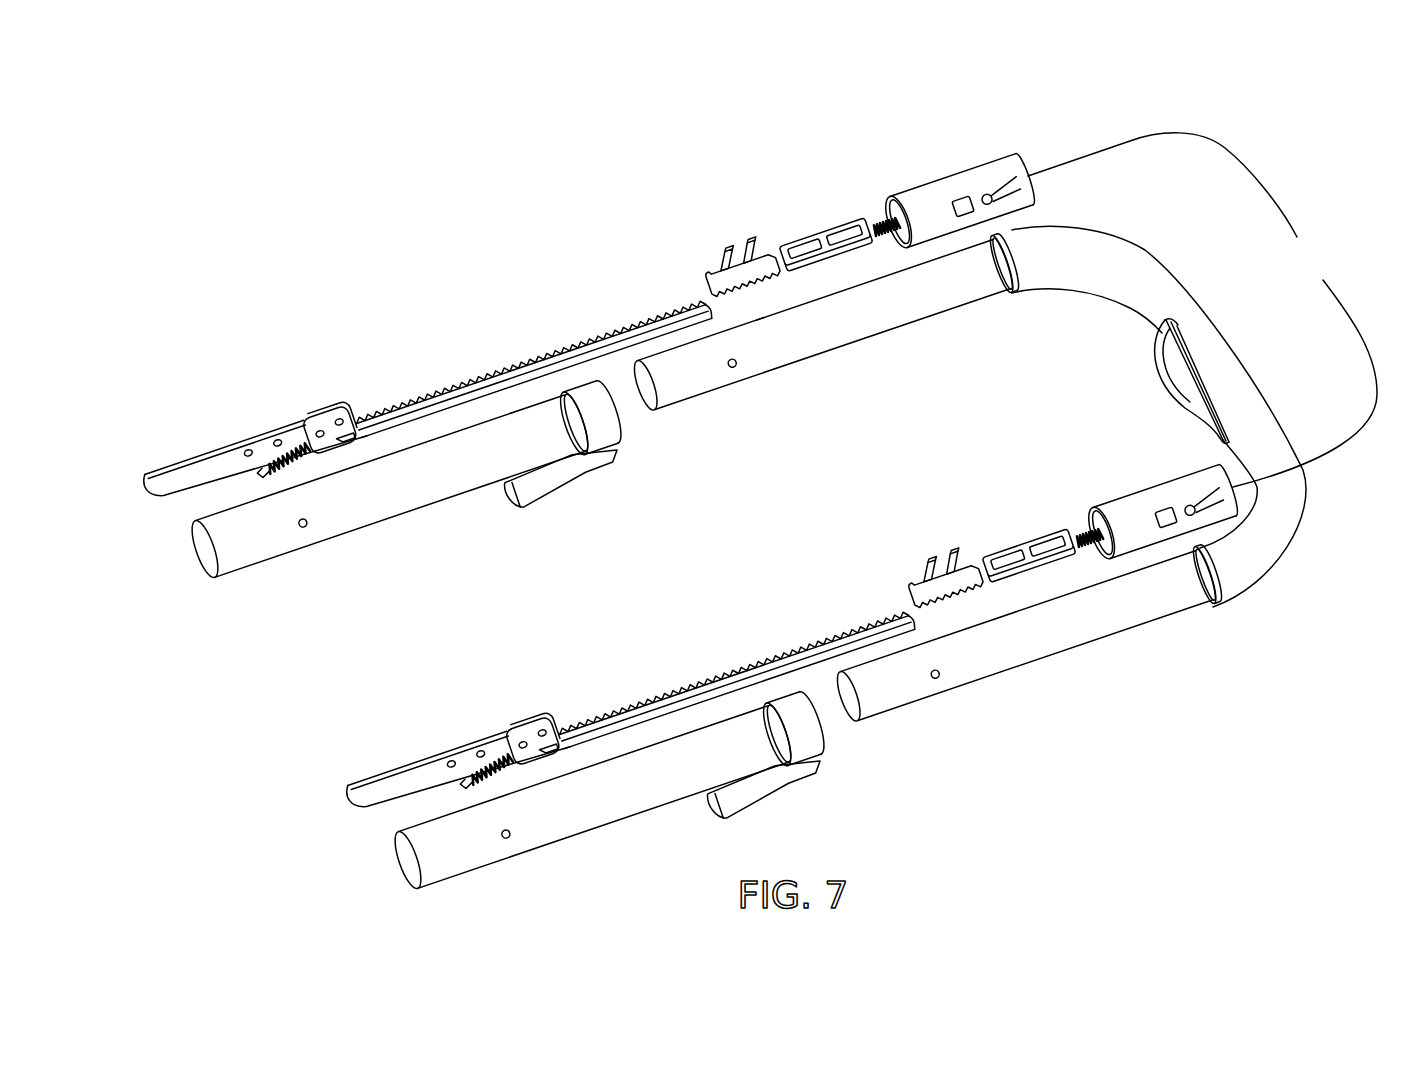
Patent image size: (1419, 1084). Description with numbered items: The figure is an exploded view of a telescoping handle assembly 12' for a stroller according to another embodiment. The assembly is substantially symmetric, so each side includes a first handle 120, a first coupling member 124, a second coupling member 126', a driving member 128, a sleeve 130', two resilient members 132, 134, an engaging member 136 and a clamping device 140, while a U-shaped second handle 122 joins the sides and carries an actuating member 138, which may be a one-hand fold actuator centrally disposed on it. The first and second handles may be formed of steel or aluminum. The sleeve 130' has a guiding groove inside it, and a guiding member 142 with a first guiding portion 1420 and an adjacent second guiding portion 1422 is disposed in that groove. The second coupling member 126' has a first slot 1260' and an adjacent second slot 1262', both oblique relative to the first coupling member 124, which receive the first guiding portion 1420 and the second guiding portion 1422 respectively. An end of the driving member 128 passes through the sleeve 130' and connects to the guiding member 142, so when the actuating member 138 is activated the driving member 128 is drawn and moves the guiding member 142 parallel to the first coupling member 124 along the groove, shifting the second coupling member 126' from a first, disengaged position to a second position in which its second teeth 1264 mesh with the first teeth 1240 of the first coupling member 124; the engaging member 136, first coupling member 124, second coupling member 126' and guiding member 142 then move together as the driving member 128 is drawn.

The telescoping handle assembly 12' is at (298, 176).
The first handle 120 is at (380, 503).
The second handle 122 is at (857, 317).
The first coupling member 124 is at (582, 345).
The first teeth 1240 is at (482, 382).
The second coupling member 126' is at (699, 262).
The first slot 1260' is at (744, 224).
The second slot 1262' is at (696, 228).
The second teeth 1264 is at (756, 295).
The driving member 128 is at (1088, 153).
The sleeve 130' is at (959, 179).
The resilient member 132 is at (882, 215).
The resilient member 134 is at (298, 428).
The engaging member 136 is at (188, 472).
The actuating member 138 is at (1180, 383).
The clamping device 140 is at (553, 477).
The guiding member 142 is at (810, 231).
The first guiding portion 1420 is at (830, 240).
The second guiding portion 1422 is at (782, 243).